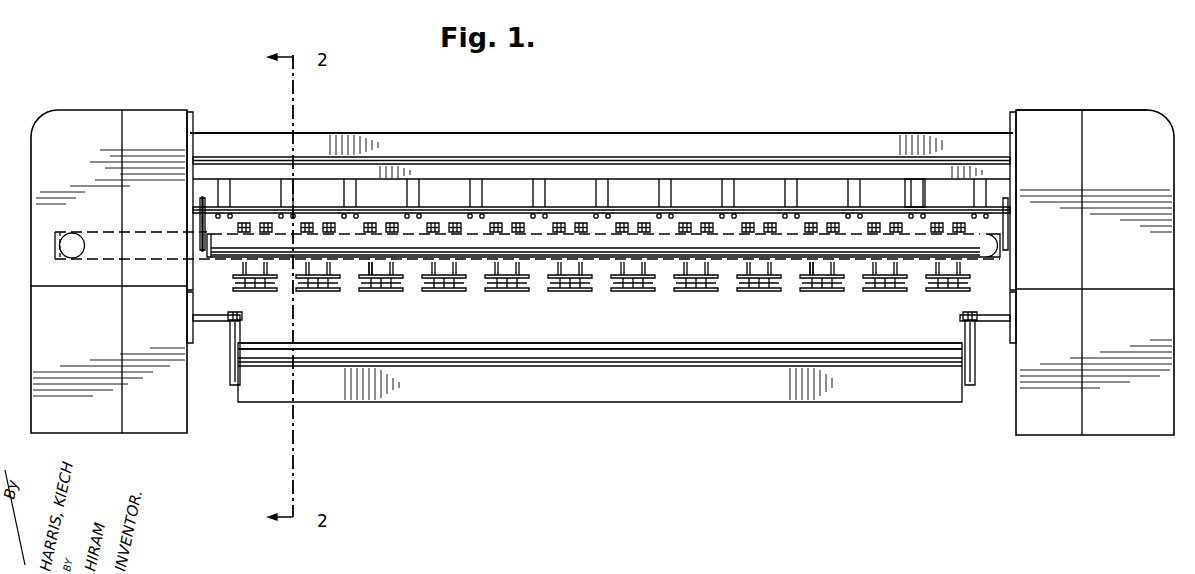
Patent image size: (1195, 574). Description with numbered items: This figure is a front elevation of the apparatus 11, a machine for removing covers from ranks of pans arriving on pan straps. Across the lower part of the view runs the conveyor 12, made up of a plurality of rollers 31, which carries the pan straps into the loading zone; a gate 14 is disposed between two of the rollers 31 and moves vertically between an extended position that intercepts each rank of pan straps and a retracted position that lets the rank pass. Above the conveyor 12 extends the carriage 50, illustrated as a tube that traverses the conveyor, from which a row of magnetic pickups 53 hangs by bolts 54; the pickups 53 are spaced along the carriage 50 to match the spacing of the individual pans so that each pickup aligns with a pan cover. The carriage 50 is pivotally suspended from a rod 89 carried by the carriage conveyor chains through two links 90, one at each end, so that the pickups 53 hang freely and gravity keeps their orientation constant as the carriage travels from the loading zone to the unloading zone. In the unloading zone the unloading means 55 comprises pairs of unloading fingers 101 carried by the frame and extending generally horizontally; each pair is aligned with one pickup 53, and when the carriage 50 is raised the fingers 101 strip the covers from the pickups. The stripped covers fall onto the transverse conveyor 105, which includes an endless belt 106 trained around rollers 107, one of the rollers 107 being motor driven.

The apparatus 11 is at (1116, 105).
The conveyor 12 is at (613, 372).
The gate 14 is at (734, 343).
The rollers 31 is at (690, 364).
The carriage 50 is at (855, 240).
The magnetic pickups 53 is at (458, 285).
The bolts 54 is at (395, 266).
The unloading means 55 is at (926, 193).
The rod 89 is at (507, 204).
The links 90 is at (205, 203).
The unloading fingers 101 is at (667, 190).
The transverse conveyor 105 is at (77, 233).
The endless belt 106 is at (112, 262).
The rollers 107 is at (70, 262).